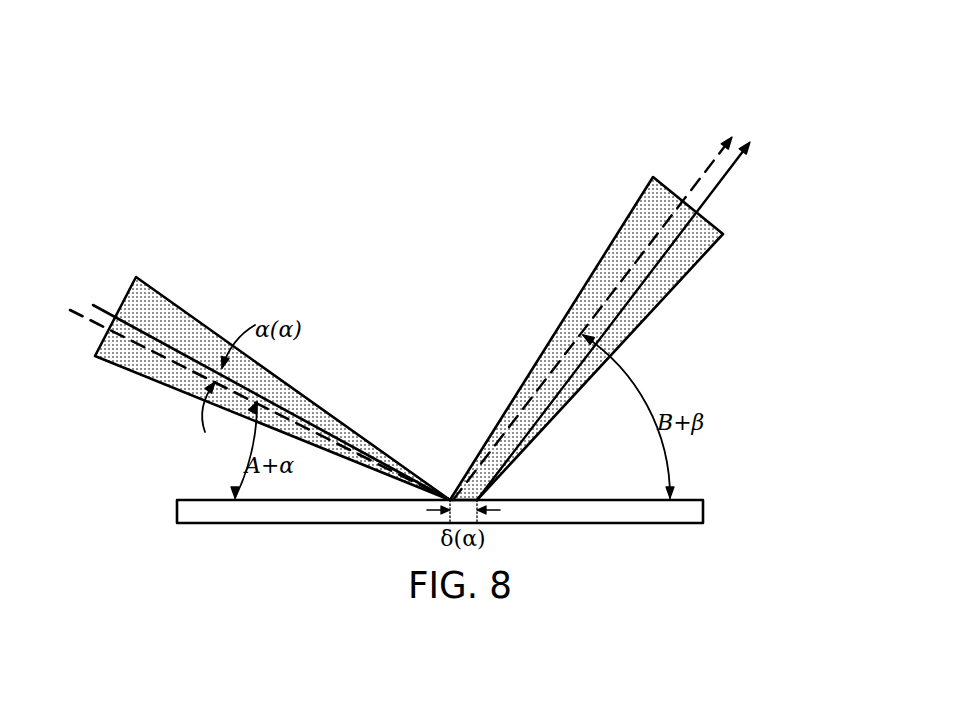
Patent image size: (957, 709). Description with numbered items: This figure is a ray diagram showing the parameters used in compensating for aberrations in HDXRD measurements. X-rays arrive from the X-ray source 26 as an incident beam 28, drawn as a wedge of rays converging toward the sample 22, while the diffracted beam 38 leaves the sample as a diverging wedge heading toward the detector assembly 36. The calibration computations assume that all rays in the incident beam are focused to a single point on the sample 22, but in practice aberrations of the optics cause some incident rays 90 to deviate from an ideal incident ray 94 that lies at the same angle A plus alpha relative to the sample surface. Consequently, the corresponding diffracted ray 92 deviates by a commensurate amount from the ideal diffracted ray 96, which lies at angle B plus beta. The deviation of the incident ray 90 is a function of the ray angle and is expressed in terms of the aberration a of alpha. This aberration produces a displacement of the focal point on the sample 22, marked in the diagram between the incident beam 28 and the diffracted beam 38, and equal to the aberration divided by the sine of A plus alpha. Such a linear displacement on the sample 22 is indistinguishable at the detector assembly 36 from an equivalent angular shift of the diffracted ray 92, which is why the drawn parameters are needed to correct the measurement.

The sample 22 is at (704, 512).
The X-ray source 26 is at (72, 303).
The incident beam 28 is at (170, 300).
The detector assembly 36 is at (754, 131).
The diffracted beam 38 is at (710, 247).
The incident ray 90 is at (102, 307).
The diffracted ray 92 is at (633, 307).
The ideal incident ray 94 is at (77, 314).
The ideal diffracted ray 96 is at (667, 220).